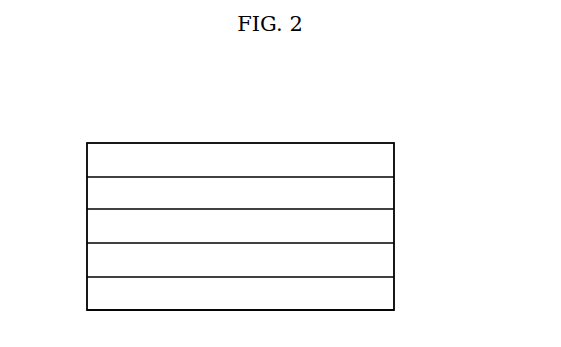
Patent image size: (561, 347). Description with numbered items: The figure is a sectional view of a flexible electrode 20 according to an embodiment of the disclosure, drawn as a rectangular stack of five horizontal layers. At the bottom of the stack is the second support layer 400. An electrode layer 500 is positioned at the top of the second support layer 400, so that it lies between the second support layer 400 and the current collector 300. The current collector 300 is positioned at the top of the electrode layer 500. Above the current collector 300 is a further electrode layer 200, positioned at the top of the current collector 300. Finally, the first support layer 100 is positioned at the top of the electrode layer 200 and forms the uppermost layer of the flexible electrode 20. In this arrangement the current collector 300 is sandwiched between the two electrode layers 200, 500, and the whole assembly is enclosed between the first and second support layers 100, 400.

The flexible electrode 20 is at (168, 97).
The first support layer 100 is at (395, 159).
The electrode layer 200 is at (395, 193).
The current collector 300 is at (395, 226).
The electrode layer 500 is at (395, 260).
The second support layer 400 is at (395, 293).